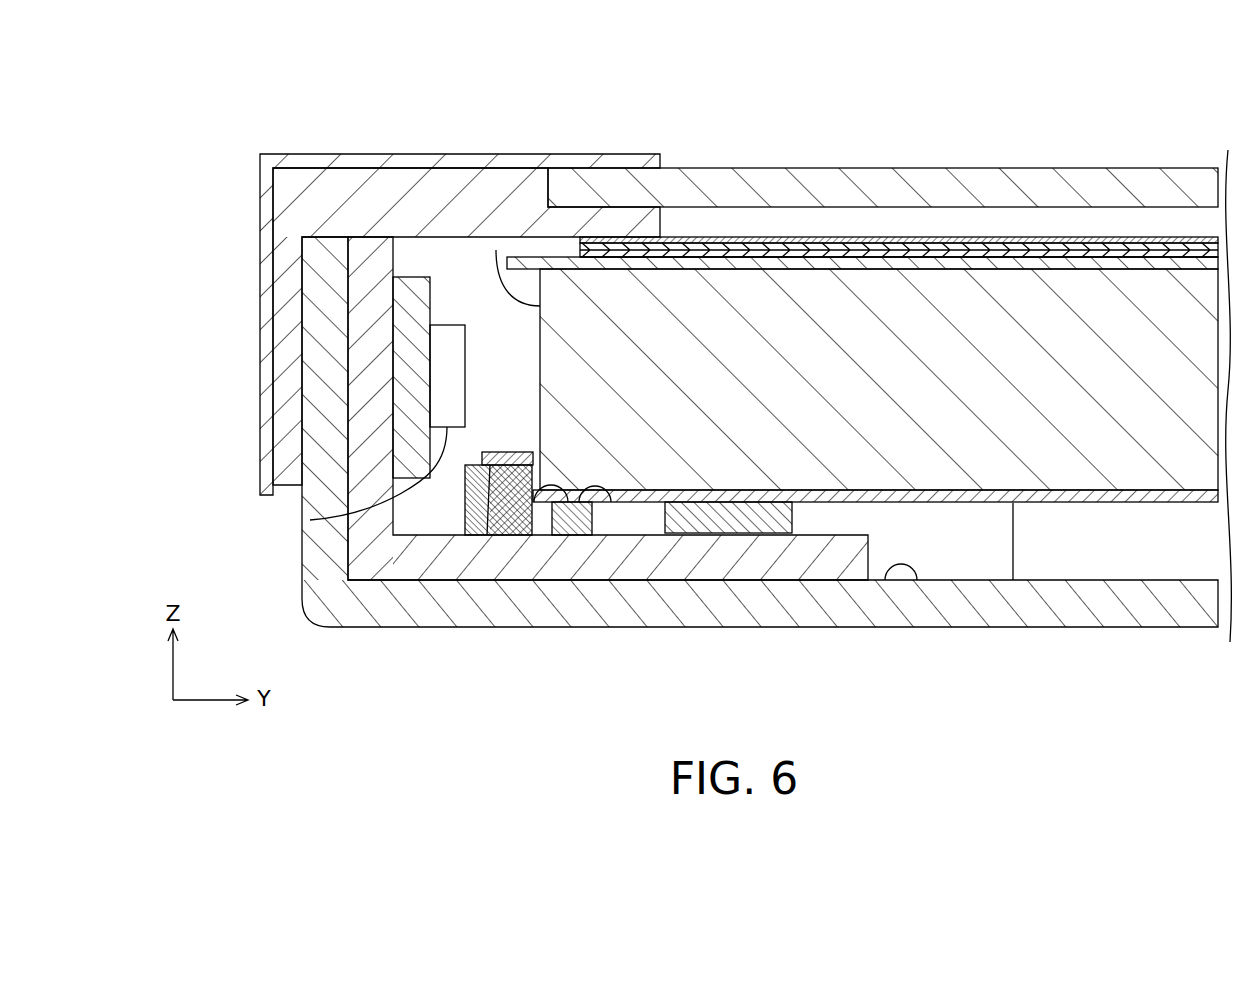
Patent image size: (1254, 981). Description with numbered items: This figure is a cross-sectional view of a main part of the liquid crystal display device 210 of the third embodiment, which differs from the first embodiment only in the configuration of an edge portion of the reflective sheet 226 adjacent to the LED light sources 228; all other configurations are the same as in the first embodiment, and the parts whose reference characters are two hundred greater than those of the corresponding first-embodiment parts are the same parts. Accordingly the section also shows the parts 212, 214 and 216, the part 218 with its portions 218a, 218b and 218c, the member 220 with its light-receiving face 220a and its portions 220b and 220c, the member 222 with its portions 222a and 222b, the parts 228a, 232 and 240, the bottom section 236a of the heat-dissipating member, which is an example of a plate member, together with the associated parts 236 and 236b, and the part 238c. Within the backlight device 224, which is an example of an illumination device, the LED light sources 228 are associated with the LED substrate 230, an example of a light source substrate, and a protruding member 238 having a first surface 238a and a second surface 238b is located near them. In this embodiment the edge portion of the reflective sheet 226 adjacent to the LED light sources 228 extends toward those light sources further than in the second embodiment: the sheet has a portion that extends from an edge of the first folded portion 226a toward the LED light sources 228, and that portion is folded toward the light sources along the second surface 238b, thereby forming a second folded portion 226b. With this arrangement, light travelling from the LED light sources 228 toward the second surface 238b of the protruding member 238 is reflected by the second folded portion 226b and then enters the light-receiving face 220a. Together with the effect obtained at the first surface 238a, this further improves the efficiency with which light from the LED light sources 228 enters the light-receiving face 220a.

The liquid crystal display device 210 is at (810, 114).
The bezel 212 is at (295, 162).
The cushion member 214 is at (378, 180).
The cover member 216 is at (712, 186).
The display panel 218 is at (899, 169).
The first polarizing plate 218a is at (1137, 121).
The liquid crystal cell 218b is at (1033, 257).
The second polarizing plate 218c is at (1093, 237).
The light guide plate 220 is at (847, 391).
The light-receiving face 220a is at (496, 250).
The upper surface layer of light guide plate 220b is at (870, 267).
The lower surface layer of light guide plate 220c is at (1133, 493).
The chassis 222 is at (697, 473).
The bottom plate of chassis 222a is at (885, 582).
The side wall of chassis 222b is at (330, 390).
The backlight device 224 is at (820, 654).
The reflective sheet 226 is at (733, 619).
The first folded portion 226a is at (541, 503).
The second folded portion 226b is at (469, 525).
The LED light sources 228 is at (322, 406).
The bent portion of flexible printed circuit 228a is at (310, 520).
The LED substrate 230 is at (413, 380).
The wiring member 232 is at (296, 405).
The frame 236 is at (522, 459).
The bottom section 236a is at (681, 560).
The side portion of frame 236b is at (370, 409).
The protruding member 238 is at (518, 575).
The first surface 238a is at (613, 503).
The second surface 238b is at (447, 453).
The extension portion of substrate 238c is at (573, 515).
The adhesive tape 240 is at (728, 510).